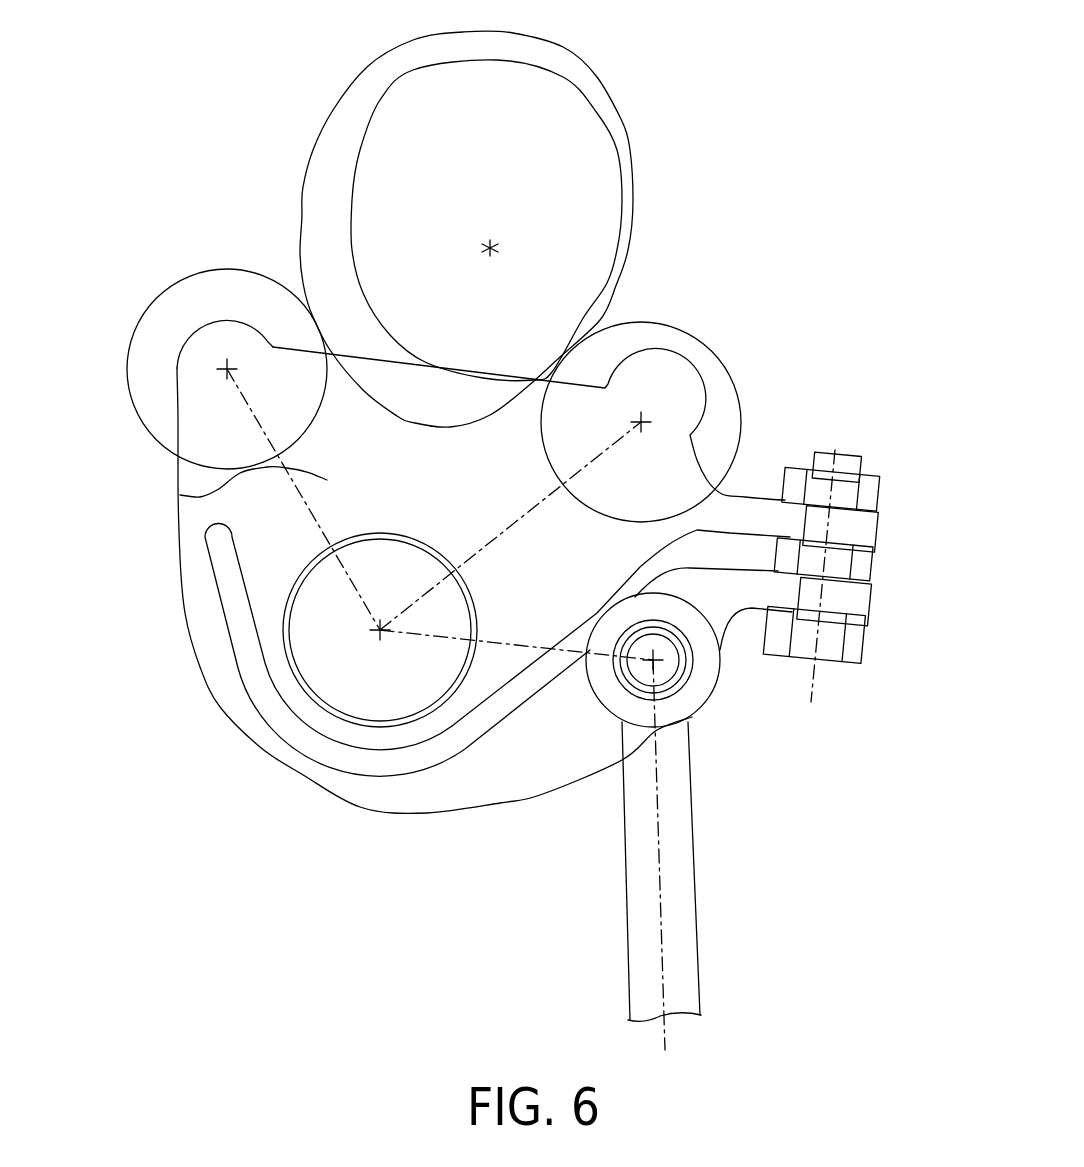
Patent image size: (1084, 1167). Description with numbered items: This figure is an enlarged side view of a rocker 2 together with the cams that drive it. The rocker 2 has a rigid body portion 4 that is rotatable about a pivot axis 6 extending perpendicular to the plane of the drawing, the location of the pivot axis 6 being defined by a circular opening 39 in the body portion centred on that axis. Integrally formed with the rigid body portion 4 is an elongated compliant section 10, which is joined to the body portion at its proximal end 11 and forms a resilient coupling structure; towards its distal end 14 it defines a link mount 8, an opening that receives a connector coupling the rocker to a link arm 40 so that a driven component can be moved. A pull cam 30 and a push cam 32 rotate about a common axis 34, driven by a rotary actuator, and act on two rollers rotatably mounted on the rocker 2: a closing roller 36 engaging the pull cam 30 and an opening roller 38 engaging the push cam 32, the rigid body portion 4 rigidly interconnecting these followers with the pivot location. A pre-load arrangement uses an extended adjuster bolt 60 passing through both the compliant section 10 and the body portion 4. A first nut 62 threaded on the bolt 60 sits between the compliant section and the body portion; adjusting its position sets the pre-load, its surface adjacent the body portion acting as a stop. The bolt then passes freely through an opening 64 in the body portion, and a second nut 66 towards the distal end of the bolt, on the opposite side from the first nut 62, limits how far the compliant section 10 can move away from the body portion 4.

The rocker 2 is at (124, 601).
The rigid body portion 4 is at (180, 495).
The pivot axis 6 is at (379, 632).
The link mount 8 is at (660, 662).
The compliant section 10 is at (283, 760).
The proximal end 11 is at (190, 545).
The distal end 14 is at (864, 600).
The pull cam 30 is at (316, 212).
The push cam 32 is at (587, 72).
The common axis 34 is at (497, 248).
The closing roller 36 is at (155, 320).
The opening roller 38 is at (703, 370).
The circular opening 39 is at (478, 593).
The link arm 40 is at (681, 886).
The adjuster bolt 60 is at (862, 660).
The first nut 62 is at (873, 565).
The opening 64 is at (876, 530).
The second nut 66 is at (880, 495).